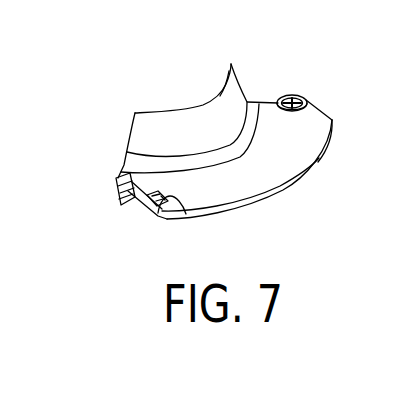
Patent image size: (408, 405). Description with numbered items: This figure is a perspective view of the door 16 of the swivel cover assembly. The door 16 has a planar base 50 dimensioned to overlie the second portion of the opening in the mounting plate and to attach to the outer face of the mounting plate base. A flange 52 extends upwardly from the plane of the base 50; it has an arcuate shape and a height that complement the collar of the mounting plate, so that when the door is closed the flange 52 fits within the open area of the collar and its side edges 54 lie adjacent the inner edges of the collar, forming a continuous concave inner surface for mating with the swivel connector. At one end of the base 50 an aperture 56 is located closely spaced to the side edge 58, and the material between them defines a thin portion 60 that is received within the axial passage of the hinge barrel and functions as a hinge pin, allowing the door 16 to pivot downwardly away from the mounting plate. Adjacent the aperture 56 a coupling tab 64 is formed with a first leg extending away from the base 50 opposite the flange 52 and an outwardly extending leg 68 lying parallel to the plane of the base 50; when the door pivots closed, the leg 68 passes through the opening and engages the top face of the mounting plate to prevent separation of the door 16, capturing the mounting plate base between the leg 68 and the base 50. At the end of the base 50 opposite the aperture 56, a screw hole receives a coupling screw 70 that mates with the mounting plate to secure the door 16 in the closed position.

The door 16 is at (258, 204).
The planar base 50 is at (302, 178).
The flange 52 is at (240, 100).
The side edges 54 is at (229, 64).
The aperture 56 is at (140, 208).
The side edge 58 is at (157, 216).
The thin portion 60 is at (186, 214).
The coupling tab 64 is at (115, 198).
The outwardly extending leg 68 is at (116, 207).
The coupling screw 70 is at (303, 94).